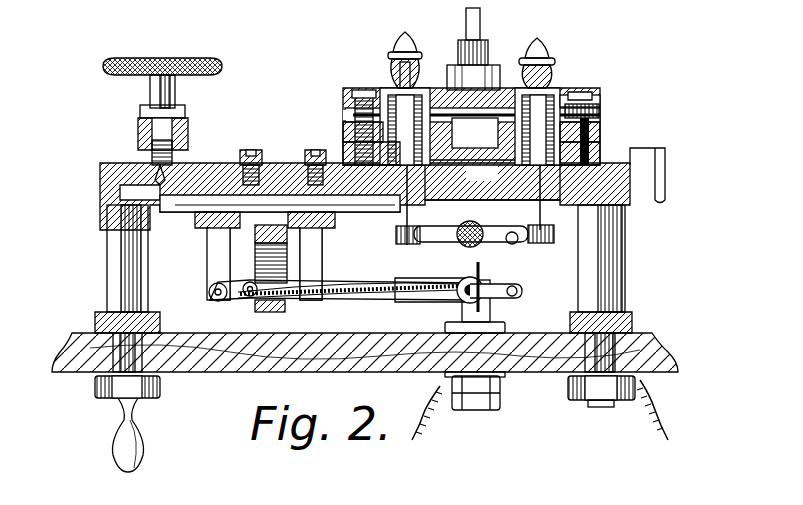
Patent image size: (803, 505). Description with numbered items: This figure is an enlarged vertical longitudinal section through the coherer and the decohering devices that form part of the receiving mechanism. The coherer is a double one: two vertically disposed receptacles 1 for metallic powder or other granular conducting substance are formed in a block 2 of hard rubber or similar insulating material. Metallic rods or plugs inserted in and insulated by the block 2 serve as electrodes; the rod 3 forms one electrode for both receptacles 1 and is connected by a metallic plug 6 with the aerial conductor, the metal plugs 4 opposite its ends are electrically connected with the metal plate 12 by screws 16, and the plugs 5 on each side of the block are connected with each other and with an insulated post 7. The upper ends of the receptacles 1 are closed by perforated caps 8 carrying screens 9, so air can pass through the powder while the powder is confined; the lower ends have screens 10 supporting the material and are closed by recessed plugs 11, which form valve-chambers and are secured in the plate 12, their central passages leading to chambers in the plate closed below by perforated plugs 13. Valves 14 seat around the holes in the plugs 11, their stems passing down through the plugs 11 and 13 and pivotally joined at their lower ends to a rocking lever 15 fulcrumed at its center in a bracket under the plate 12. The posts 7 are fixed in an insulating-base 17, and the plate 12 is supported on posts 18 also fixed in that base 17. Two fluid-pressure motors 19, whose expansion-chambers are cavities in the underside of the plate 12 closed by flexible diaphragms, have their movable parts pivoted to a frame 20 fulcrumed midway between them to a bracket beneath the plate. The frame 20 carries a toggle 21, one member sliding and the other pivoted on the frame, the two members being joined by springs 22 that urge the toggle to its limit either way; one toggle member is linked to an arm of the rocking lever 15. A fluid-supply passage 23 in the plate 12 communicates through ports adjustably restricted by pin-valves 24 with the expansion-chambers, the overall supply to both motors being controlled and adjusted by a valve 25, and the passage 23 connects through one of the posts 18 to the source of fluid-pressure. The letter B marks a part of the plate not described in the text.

The receptacles 1 is at (380, 90).
The block 2 is at (598, 100).
The rod 3 is at (330, 118).
The metal plugs 4 is at (343, 112).
The plugs 5 is at (98, 187).
The metallic plug 6 is at (460, 55).
The insulated post 7 is at (198, 290).
The caps 8 is at (415, 55).
The screens 9 is at (400, 85).
The screens 10 is at (475, 133).
The marking B is at (462, 133).
The recessed plugs 11 is at (492, 180).
The metal plate 12 is at (100, 175).
The plugs 13 is at (396, 236).
The valves 14 is at (345, 130).
The rocking lever 15 is at (445, 244).
The screws 16 is at (350, 163).
The insulating-base 17 is at (62, 368).
The posts 18 is at (107, 262).
The fluid-pressure motors 19 is at (208, 232).
The frame 20 is at (335, 300).
The toggle 21 is at (432, 302).
The springs 22 is at (375, 297).
The fluid-supply passage 23 is at (200, 178).
The pin-valves 24 is at (308, 162).
The valve 25 is at (140, 163).